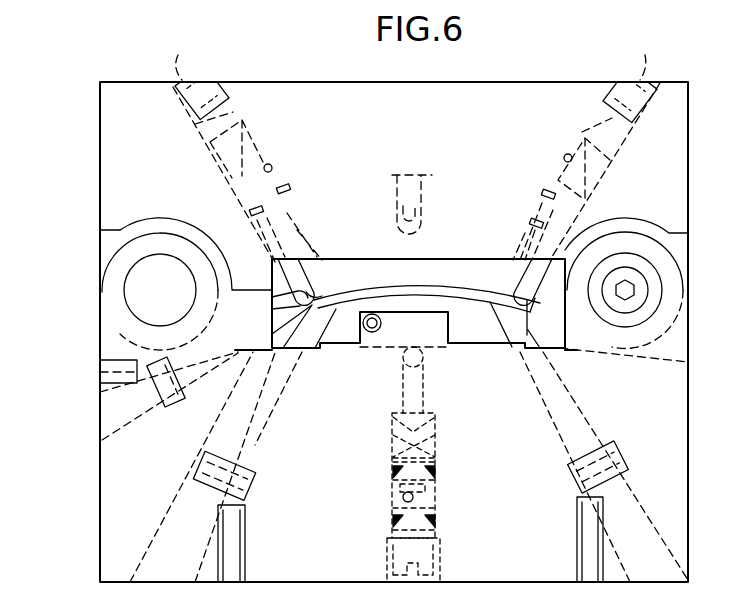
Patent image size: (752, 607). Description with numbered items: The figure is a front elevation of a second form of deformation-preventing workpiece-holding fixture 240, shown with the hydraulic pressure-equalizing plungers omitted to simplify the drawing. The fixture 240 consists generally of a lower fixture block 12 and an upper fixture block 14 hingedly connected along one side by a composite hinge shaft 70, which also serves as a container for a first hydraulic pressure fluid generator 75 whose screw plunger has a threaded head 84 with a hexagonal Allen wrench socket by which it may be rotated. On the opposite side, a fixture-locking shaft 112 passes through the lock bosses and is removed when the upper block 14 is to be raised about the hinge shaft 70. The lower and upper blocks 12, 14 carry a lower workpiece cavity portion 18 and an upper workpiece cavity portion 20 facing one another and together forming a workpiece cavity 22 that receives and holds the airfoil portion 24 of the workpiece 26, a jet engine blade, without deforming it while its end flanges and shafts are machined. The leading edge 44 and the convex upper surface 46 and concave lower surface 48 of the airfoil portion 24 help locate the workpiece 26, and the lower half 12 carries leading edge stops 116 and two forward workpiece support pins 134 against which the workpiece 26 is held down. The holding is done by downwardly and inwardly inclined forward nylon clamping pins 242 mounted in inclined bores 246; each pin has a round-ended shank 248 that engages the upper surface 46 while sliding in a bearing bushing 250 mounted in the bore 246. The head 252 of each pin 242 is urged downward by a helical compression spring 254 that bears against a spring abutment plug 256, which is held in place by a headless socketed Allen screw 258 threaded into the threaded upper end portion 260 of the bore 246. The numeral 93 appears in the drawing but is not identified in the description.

The deformation-preventing pressure-equalizing fixture 240 is at (99, 92).
The upper fixture block 14 is at (100, 163).
The lower fixture block 12 is at (100, 472).
The fixture-locking shaft 112 is at (135, 283).
The leading edge stop 116 is at (200, 384).
The guide 93 is at (182, 376).
The threaded head 84 is at (648, 268).
The first hydraulic pressure fluid generator 75 is at (664, 296).
The composite hinge shaft 70 is at (641, 316).
The upper workpiece cavity portion 20 is at (381, 259).
The concave lower surface 48 is at (455, 302).
The airfoil portion 24 is at (403, 290).
The leading edge 44 is at (322, 298).
The workpiece 26 is at (456, 294).
The convex upper surface 46 is at (446, 259).
The lower workpiece cavity portion 18 is at (310, 352).
The workpiece cavity 22 is at (272, 264).
The round-ended shank 248 is at (320, 259).
The head 252 is at (236, 196).
The headless socketed Allen screw 258 is at (207, 80).
The threaded upper end portion 260 is at (430, 56).
The spring abutment plug 256 is at (241, 112).
The helical compression spring 254 is at (256, 135).
The inclined bore 246 is at (273, 164).
The forward nylon clamping pin 242 is at (299, 185).
The bearing bushing 250 is at (303, 223).
The forward workpiece support pin 134 is at (270, 422).